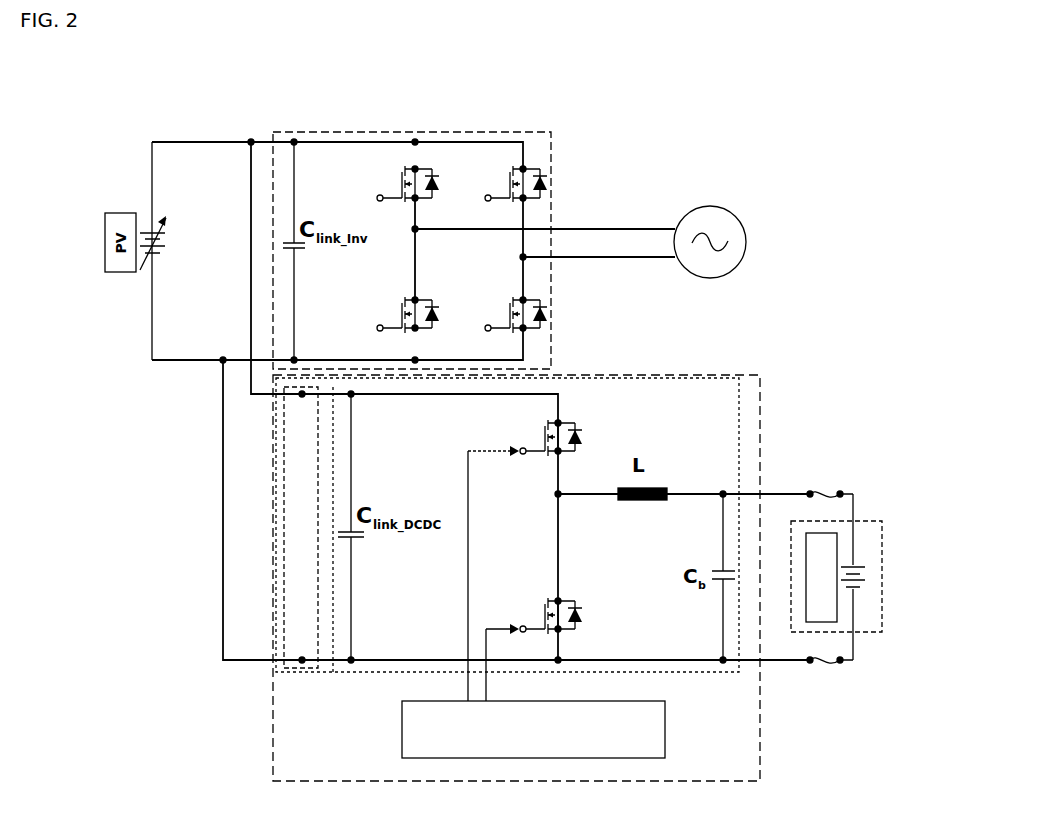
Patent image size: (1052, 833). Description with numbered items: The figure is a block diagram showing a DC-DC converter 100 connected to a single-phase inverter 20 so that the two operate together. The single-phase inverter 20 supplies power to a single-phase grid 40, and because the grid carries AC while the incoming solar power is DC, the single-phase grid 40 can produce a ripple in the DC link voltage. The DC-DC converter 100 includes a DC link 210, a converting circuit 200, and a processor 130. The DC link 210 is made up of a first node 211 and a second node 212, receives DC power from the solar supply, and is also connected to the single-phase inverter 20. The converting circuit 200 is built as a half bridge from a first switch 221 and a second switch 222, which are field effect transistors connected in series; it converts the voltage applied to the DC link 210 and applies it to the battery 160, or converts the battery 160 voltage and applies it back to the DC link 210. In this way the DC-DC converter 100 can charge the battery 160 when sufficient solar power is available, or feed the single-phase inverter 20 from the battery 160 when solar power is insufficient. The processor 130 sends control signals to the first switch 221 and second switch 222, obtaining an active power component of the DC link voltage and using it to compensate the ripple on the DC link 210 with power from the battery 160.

The single-phase inverter 20 is at (333, 131).
The single-phase grid 40 is at (732, 217).
The DC-DC converter 100 is at (762, 428).
The processor 130 is at (667, 717).
The battery 160 is at (870, 521).
The converting circuit 200 is at (617, 386).
The DC link 210 is at (307, 674).
The first node 211 is at (300, 396).
The second node 212 is at (300, 662).
The first switch 221 is at (578, 428).
The second switch 222 is at (578, 606).